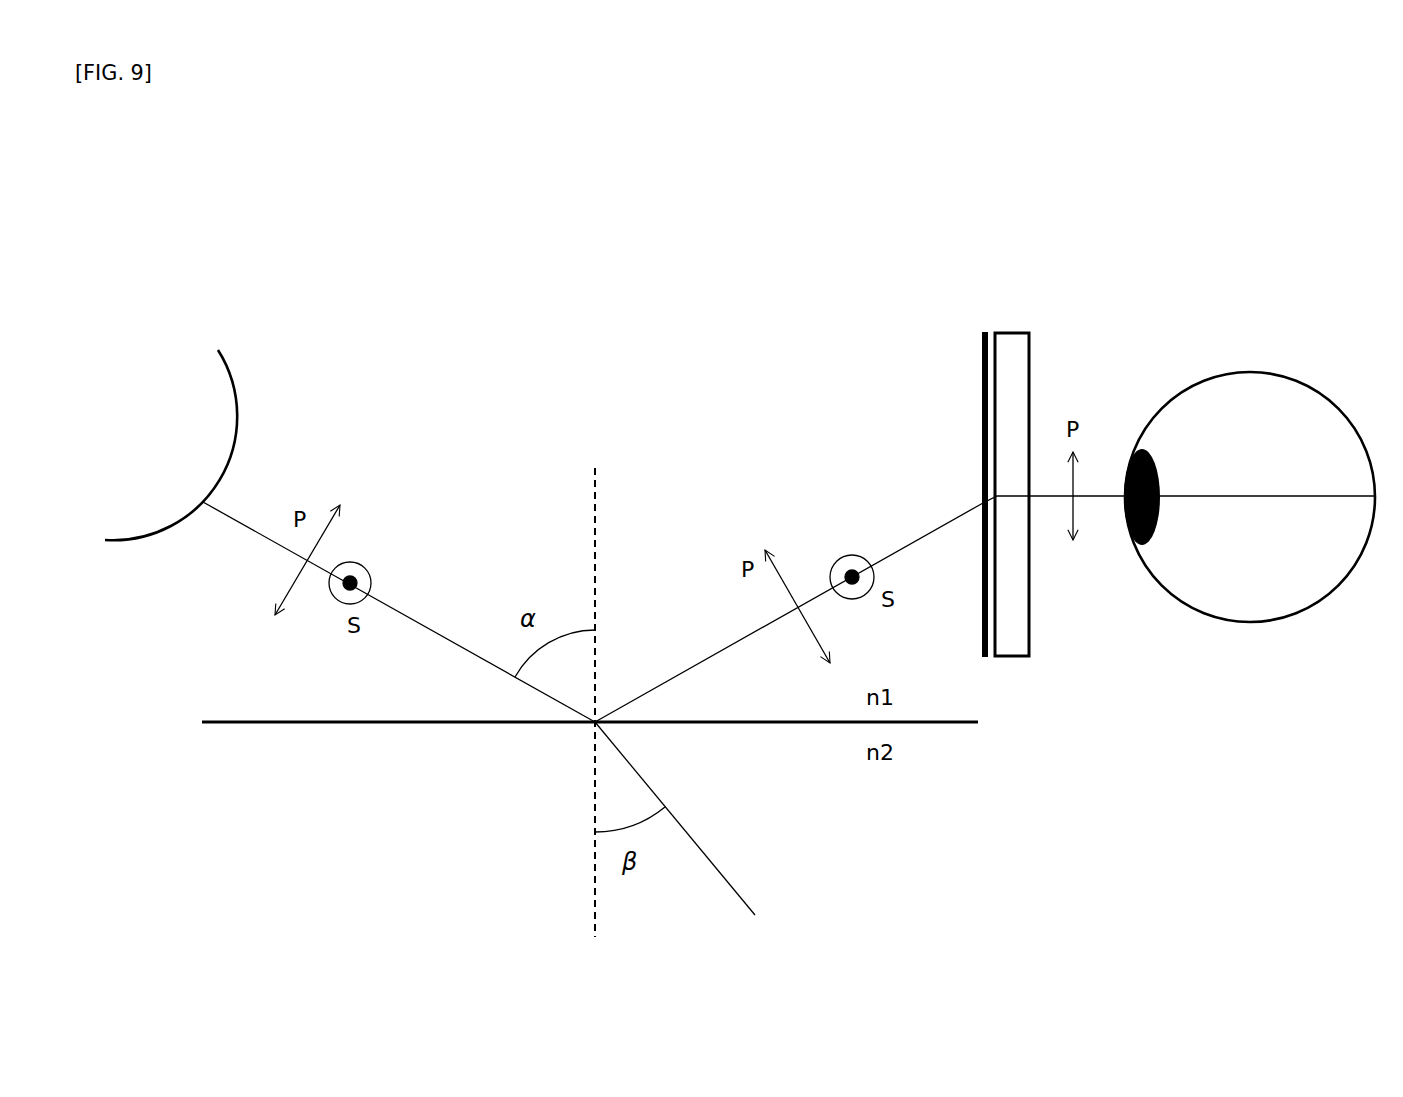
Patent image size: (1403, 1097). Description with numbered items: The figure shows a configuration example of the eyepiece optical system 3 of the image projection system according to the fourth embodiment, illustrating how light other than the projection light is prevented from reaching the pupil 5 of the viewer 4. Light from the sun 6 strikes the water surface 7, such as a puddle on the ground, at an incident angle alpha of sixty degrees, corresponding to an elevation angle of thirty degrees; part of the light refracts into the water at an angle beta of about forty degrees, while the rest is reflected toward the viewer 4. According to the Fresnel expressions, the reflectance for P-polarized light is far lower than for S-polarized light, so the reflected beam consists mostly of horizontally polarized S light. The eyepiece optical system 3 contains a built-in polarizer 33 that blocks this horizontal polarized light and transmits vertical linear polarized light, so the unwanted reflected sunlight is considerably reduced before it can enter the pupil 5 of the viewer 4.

The sun 6 is at (235, 390).
The water surface 7 is at (445, 723).
The polarizer 33 is at (984, 330).
The eyepiece optical system 3 is at (1011, 332).
The viewer 4 is at (1249, 371).
The pupil 5 is at (1143, 547).